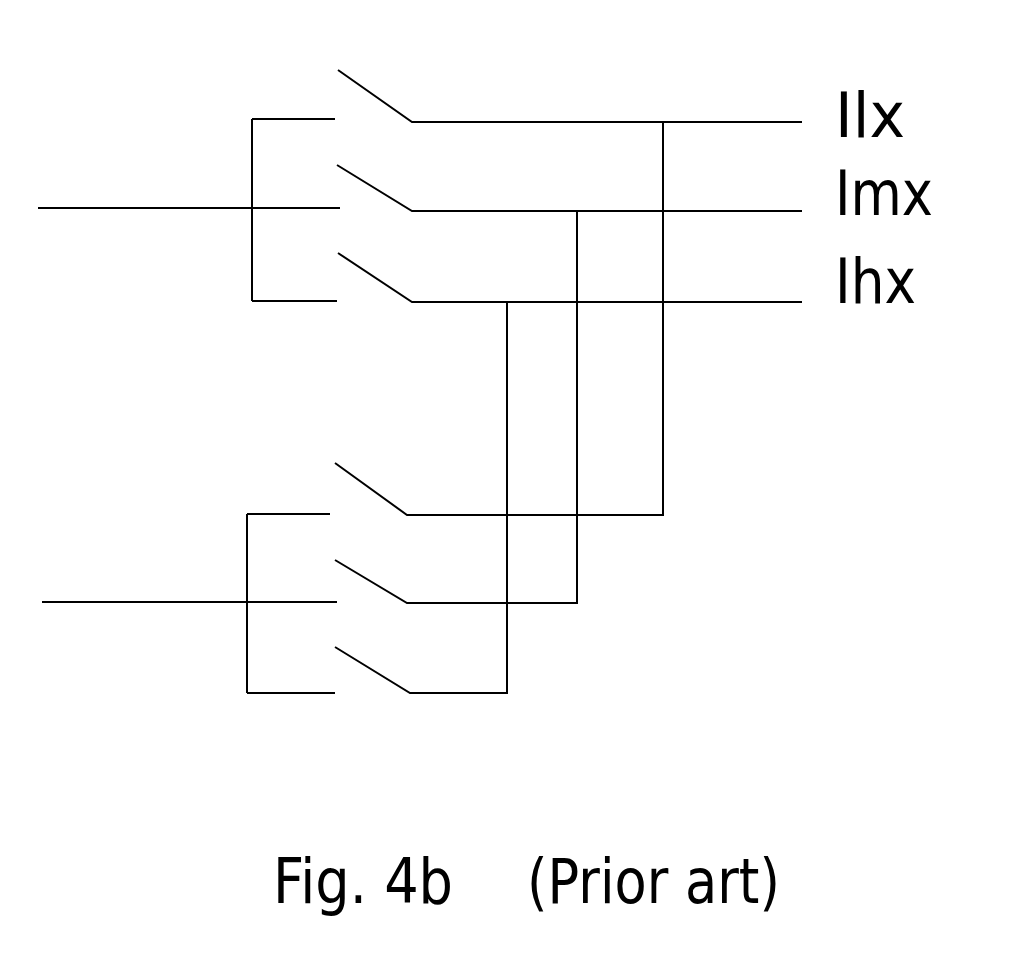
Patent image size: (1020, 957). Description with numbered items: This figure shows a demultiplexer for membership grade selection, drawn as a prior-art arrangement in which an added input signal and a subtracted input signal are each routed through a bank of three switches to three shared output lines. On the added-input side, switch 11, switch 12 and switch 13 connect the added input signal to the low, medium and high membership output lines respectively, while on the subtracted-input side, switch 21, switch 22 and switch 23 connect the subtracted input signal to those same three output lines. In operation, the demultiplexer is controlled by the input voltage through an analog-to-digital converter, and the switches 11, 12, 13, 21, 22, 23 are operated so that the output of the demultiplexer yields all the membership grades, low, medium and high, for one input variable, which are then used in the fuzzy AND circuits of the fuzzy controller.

The switch phi-11 (I+ to Ilx) 11 is at (570, 76).
The switch phi-12 (I+ to Imx) 12 is at (569, 168).
The switch phi-13 (I+ to Ihx) 13 is at (570, 263).
The switch phi-21 (I- to Ilx) 21 is at (499, 318).
The switch phi-22 (I- to Imx) 22 is at (456, 407).
The switch phi-23 (I- to Ihx) 23 is at (421, 497).